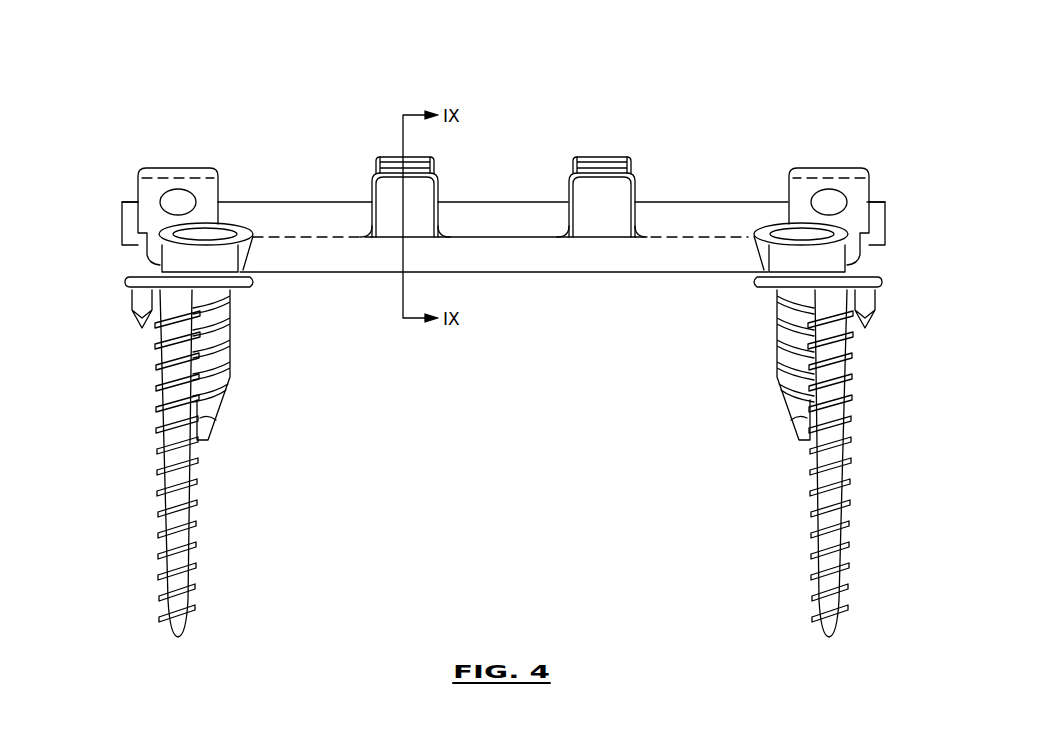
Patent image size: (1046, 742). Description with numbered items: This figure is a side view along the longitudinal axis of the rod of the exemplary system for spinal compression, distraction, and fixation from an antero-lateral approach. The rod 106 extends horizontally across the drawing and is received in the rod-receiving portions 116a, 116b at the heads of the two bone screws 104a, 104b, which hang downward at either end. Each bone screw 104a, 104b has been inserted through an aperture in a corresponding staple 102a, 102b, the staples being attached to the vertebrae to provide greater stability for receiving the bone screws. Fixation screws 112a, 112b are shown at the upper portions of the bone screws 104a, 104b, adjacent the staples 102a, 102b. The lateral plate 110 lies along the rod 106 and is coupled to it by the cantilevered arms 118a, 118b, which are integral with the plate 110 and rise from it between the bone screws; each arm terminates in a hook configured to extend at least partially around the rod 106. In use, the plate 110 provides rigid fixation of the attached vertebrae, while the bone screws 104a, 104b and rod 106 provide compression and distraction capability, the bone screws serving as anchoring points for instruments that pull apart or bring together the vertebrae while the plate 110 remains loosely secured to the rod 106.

The rod 106 is at (482, 210).
The lateral plate 110 is at (482, 252).
The cantilevered arm 118a is at (387, 225).
The cantilevered arm 118b is at (598, 215).
The rod-receiving portion 116a is at (167, 180).
The rod-receiving portion 116b is at (840, 182).
The fixation screw 112a is at (225, 385).
The fixation screw 112b is at (780, 378).
The staple 102a is at (127, 290).
The staple 102b is at (880, 287).
The bone screw 104a is at (185, 548).
The bone screw 104b is at (812, 582).